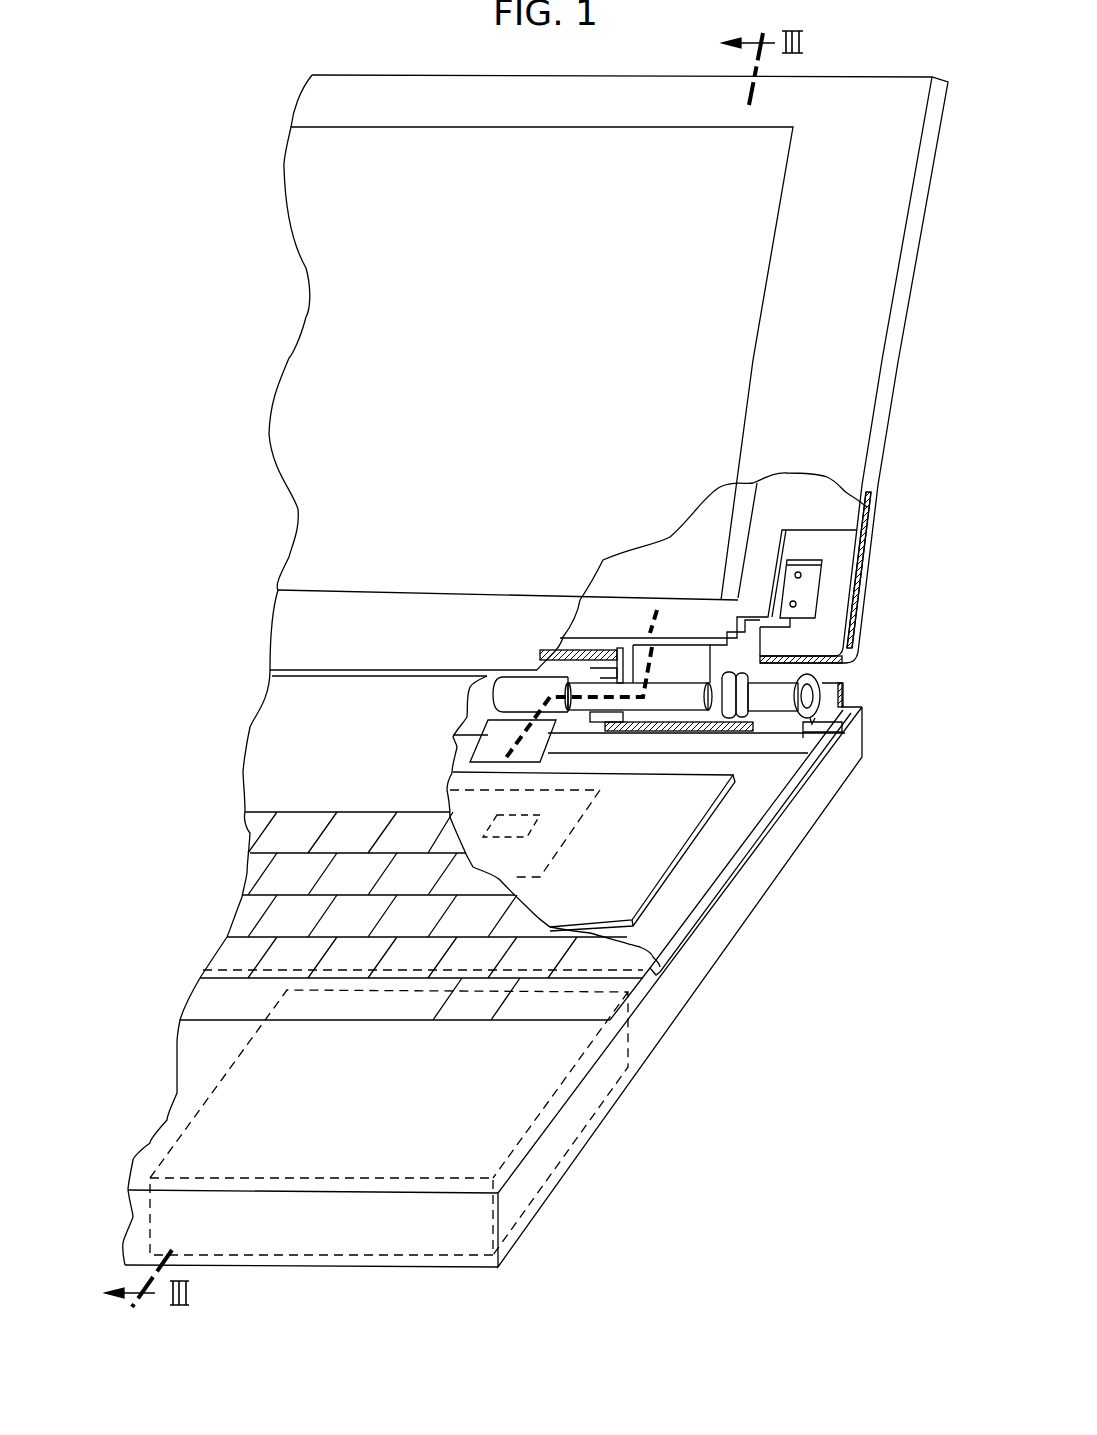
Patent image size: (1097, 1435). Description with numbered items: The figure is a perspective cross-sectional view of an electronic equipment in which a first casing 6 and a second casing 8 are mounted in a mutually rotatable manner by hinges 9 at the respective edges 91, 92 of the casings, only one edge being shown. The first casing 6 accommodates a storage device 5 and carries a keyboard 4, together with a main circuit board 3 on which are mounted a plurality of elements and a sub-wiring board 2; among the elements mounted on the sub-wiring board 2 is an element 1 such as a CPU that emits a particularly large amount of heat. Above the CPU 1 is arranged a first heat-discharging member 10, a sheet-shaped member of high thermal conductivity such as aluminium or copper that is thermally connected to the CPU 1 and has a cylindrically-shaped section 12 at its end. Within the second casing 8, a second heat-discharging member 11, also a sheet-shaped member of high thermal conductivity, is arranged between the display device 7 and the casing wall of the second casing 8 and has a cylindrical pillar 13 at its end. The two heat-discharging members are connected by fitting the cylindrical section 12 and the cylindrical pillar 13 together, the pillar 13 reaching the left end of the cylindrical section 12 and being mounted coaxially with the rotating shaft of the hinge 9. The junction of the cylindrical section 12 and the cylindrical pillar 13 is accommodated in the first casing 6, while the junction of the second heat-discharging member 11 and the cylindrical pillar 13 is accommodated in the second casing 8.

The element 1 is at (533, 817).
The sub-wiring board 2 is at (557, 860).
The main circuit board 3 is at (707, 860).
The keyboard 4 is at (262, 868).
The storage device 5 is at (582, 1114).
The first casing 6 is at (717, 947).
The display device 7 is at (747, 515).
The second casing 8 is at (902, 287).
The hinge 9 is at (812, 697).
The first heat-discharging member 10 is at (693, 808).
The second heat-discharging member 11 is at (845, 517).
The cylindrically-shaped section 12 is at (512, 690).
The cylindrical pillar 13 is at (670, 698).
The edge 91 is at (838, 726).
The edge 92 is at (801, 573).